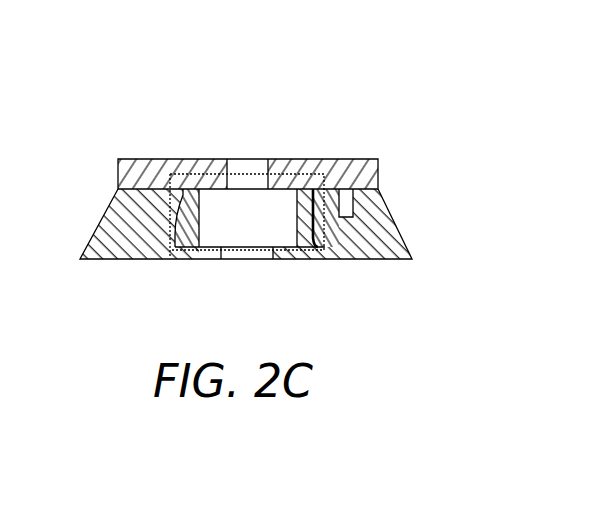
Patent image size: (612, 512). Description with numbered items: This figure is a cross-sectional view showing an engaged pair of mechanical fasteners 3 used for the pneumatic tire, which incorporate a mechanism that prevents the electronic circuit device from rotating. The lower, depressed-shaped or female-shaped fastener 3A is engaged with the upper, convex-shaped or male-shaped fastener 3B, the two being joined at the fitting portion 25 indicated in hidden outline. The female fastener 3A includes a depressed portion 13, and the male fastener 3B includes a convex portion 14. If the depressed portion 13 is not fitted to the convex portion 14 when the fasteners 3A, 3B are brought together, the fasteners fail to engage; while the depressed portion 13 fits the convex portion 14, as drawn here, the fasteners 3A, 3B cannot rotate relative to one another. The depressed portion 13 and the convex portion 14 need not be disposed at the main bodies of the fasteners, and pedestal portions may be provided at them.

The mechanical fastener 3 is at (278, 213).
The depressed-shaped or female-shaped fastener 3A is at (386, 247).
The convex-shaped or male-shaped fastener 3B is at (349, 170).
The depressed portion 13 is at (343, 216).
The convex portion 14 is at (343, 216).
The fitting portion 25 is at (172, 174).